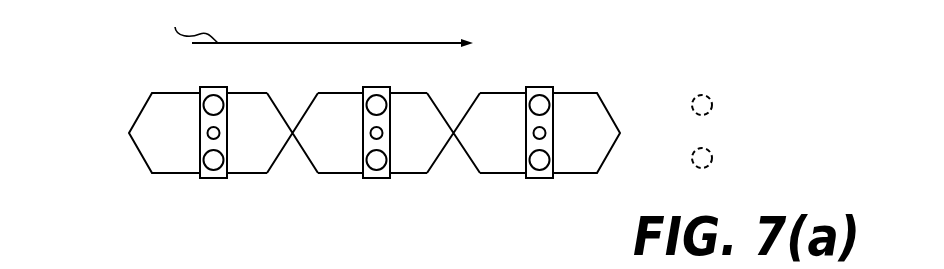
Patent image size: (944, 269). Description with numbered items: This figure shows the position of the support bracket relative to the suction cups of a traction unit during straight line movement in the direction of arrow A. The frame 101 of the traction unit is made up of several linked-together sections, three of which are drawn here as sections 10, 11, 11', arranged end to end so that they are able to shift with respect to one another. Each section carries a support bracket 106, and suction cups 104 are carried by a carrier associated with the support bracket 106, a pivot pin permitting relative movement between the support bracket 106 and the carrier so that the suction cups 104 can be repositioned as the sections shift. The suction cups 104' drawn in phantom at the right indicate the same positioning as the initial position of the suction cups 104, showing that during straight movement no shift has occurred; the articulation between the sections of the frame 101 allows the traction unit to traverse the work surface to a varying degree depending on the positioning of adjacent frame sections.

The frame 101 is at (132, 77).
The frame section 10 is at (265, 146).
The frame section 11 is at (399, 132).
The frame section 11' is at (550, 132).
The suction cups 104 is at (224, 184).
The suction cups 104' is at (742, 131).
The support bracket 106 is at (202, 128).